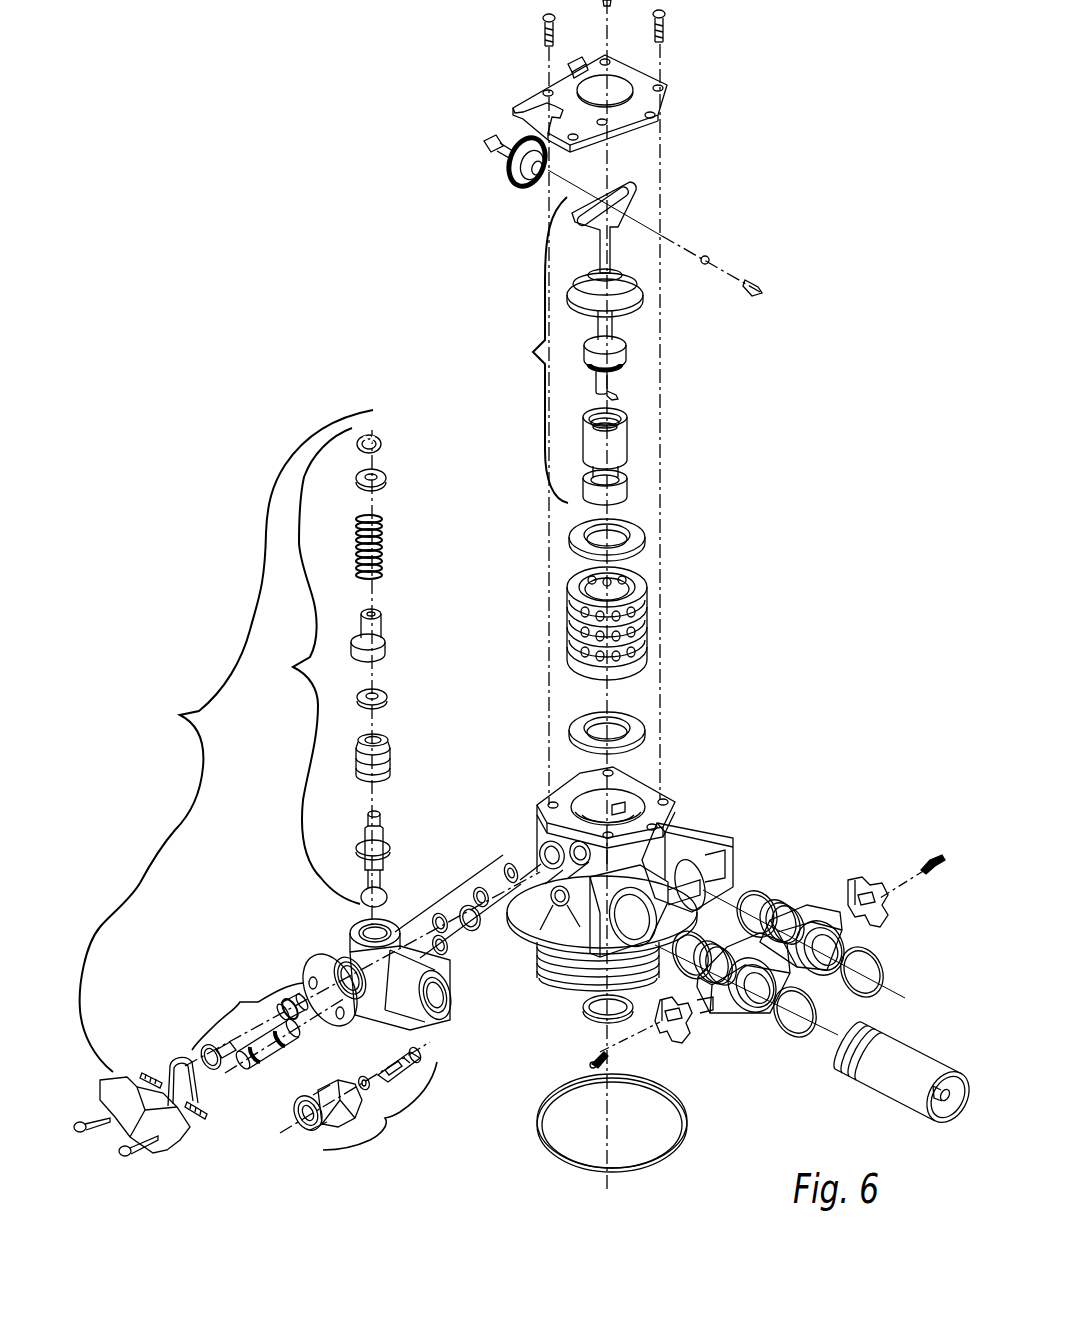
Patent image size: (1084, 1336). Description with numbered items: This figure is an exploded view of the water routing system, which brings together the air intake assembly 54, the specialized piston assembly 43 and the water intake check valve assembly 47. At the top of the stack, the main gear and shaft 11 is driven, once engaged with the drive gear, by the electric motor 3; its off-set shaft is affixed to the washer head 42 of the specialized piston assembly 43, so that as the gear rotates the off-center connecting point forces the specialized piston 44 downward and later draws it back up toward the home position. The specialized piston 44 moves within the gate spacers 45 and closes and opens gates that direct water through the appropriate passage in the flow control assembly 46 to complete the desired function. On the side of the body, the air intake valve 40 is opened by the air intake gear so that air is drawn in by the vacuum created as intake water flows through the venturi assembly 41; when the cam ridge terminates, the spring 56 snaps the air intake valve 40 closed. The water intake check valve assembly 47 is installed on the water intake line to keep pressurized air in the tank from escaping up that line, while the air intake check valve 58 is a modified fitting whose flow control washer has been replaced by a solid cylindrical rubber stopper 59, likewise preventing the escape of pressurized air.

The electric motor 3 is at (721, 864).
The main gear and shaft 11 is at (503, 178).
The air intake valve 40 is at (327, 667).
The venturi assembly 41 is at (251, 1023).
The washer head 42 is at (641, 215).
The specialized piston assembly 43 is at (570, 350).
The specialized piston 44 is at (651, 456).
The gate spacers 45 is at (645, 623).
The flow control assembly 46 is at (567, 895).
The water intake check valve assembly 47 is at (906, 1081).
The air intake assembly 54 is at (223, 783).
The spring 56 is at (409, 547).
The air intake check valve 58 is at (363, 1106).
The solid cylindrical rubber stopper 59 is at (364, 1069).